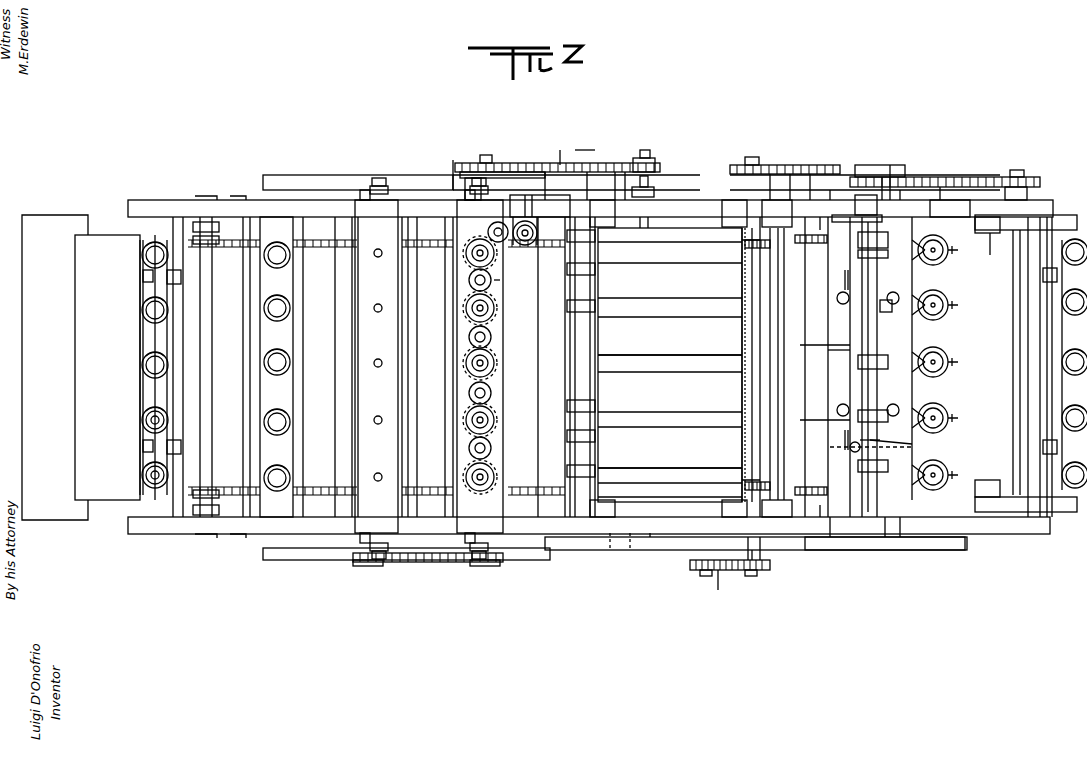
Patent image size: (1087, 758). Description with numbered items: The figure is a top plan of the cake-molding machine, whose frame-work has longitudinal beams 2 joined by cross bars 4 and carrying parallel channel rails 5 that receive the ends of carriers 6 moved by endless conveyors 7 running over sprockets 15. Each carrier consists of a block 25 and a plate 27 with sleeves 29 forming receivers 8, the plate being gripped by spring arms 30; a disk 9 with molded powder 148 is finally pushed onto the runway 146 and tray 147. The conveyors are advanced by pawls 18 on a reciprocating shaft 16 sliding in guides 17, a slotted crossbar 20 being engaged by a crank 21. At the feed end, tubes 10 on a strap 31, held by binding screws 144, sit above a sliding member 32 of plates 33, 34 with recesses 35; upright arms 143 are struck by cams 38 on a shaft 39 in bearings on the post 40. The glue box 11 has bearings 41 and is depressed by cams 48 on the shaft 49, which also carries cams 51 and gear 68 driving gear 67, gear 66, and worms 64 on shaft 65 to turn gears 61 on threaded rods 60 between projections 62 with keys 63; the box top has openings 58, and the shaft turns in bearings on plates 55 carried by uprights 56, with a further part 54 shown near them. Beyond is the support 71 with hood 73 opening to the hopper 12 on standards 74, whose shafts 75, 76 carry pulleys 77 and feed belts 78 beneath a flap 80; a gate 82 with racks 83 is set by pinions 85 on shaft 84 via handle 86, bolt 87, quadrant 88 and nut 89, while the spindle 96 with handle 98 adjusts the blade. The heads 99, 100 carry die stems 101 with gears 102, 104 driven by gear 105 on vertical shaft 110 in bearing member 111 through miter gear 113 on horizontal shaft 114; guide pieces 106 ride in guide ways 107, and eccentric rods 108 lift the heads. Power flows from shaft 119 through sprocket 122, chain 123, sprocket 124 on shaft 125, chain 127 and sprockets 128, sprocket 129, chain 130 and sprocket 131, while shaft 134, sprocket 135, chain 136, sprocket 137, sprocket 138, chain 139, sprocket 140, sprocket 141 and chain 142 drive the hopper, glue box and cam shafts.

The longitudinal beams 2 is at (155, 367).
The cross bars 4 is at (240, 520).
The rails 5 is at (200, 205).
The carriers 6 is at (265, 210).
The conveyor 7 is at (418, 245).
The receivers 8 is at (277, 375).
The disks 9 is at (155, 490).
The tubes 10 is at (888, 421).
The glue box 11 is at (825, 381).
The hopper 12 is at (740, 333).
The sprockets 15 is at (1052, 200).
The reciprocating shaft 16 is at (940, 187).
The guides 17 is at (453, 178).
The pawls 18 is at (335, 200).
The slotted crossbar 20 is at (617, 172).
The crank 21 is at (585, 172).
The block 25 is at (634, 367).
The plate 27 is at (1066, 325).
The sleeves 29 is at (165, 415).
The spring arms 30 is at (143, 278).
The strap 31 is at (924, 222).
The member 32 is at (950, 360).
The plate 33 is at (925, 400).
The plate 34 is at (928, 320).
The recesses 35 is at (925, 487).
The cams 38 is at (1055, 215).
The shaft 39 is at (1013, 392).
The post 40 is at (1030, 200).
The bearings 41 is at (902, 190).
The cams 48 is at (845, 245).
The shaft 49 is at (880, 367).
The cams 51 is at (890, 248).
The rod 54 is at (832, 195).
The plates 55 is at (888, 177).
The uprights 56 is at (822, 195).
The openings 58 is at (837, 298).
The threaded rods 60 is at (855, 452).
The gears 61 is at (858, 310).
The projections 62 is at (940, 244).
The keys 63 is at (912, 444).
The worms 64 is at (845, 280).
The shaft 65 is at (848, 358).
The gear 66 is at (865, 165).
The gear 67 is at (800, 262).
The gear 68 is at (857, 208).
The support 71 is at (777, 365).
The hood 73 is at (773, 367).
The standards 74 is at (668, 365).
The shaft 75 is at (752, 555).
The shaft 76 is at (575, 390).
The pulleys 77 is at (600, 408).
The feed belts 78 is at (668, 310).
The flap 80 is at (600, 448).
The gate 82 is at (748, 443).
The racks 83 is at (742, 242).
The shaft 84 is at (752, 388).
The pinions 85 is at (745, 246).
The handle 86 is at (774, 364).
The bolt 87 is at (774, 364).
The quadrant 88 is at (772, 165).
The nut 89 is at (792, 172).
The spindle 96 is at (650, 222).
The handle 98 is at (650, 187).
The head 99 is at (498, 327).
The head 100 is at (376, 366).
The stems 101 is at (377, 258).
The gears 102 is at (494, 338).
The gear 104 is at (492, 227).
The drive gear 105 is at (537, 231).
The guide pieces 106 is at (390, 192).
The guide ways 107 is at (372, 185).
The eccentric rods 108 is at (385, 178).
The vertical shaft 110 is at (530, 245).
The bearing member 111 is at (588, 137).
The miter gear 113 is at (542, 206).
The horizontal shaft 114 is at (533, 163).
The shaft 119 is at (652, 550).
The sprocket 122 is at (650, 158).
The chain 123 is at (548, 172).
The sprocket 124 is at (470, 178).
The shaft 125 is at (488, 155).
The chain 127 is at (432, 565).
The sprockets 128 is at (365, 568).
The sprocket 129 is at (453, 160).
The chain 130 is at (505, 172).
The sprocket 131 is at (558, 150).
The shaft 134 is at (708, 572).
The sprocket 135 is at (700, 572).
The chain 136 is at (718, 575).
The sprocket 137 is at (752, 572).
The sprocket 138 is at (752, 157).
The chain 139 is at (805, 165).
The sprocket 140 is at (885, 165).
The sprocket 141 is at (1017, 170).
The chain 142 is at (982, 177).
The upright arms 143 is at (990, 233).
The binding screws 144 is at (995, 253).
The runway 146 is at (107, 367).
The tray 147 is at (55, 367).
The powder 148 is at (140, 368).